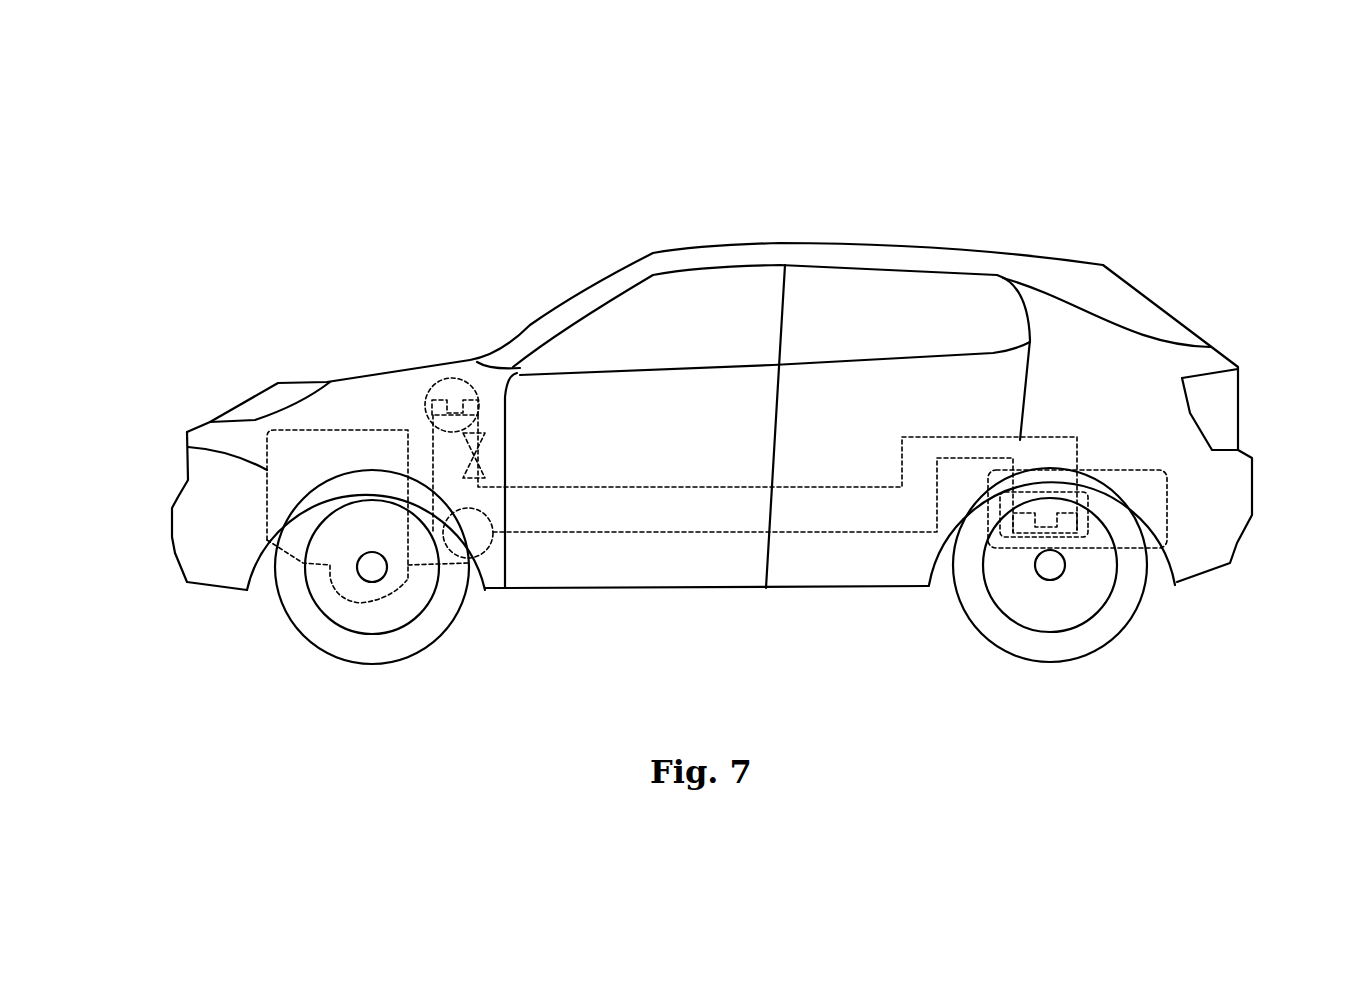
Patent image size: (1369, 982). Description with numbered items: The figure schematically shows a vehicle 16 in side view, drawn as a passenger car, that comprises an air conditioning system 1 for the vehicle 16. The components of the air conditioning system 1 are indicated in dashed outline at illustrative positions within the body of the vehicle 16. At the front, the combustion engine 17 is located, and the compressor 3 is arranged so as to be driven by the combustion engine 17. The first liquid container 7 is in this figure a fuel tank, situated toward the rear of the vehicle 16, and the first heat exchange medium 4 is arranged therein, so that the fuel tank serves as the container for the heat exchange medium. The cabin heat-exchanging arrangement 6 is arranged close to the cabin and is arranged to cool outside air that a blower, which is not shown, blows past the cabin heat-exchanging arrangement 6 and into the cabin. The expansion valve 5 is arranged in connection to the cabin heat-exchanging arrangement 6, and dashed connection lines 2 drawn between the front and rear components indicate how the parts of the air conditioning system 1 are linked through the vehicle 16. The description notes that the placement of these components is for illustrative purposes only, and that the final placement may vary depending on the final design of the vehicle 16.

The air conditioning system 1 is at (470, 238).
The data line 2 is at (748, 532).
The compressor 3 is at (491, 558).
The first heat exchange medium 4 is at (1090, 508).
The expansion valve 5 is at (477, 462).
The cabin heat-exchanging arrangement 6 is at (450, 378).
The first liquid container 7 is at (1140, 467).
The vehicle 16 is at (240, 162).
The combustion engine 17 is at (187, 445).